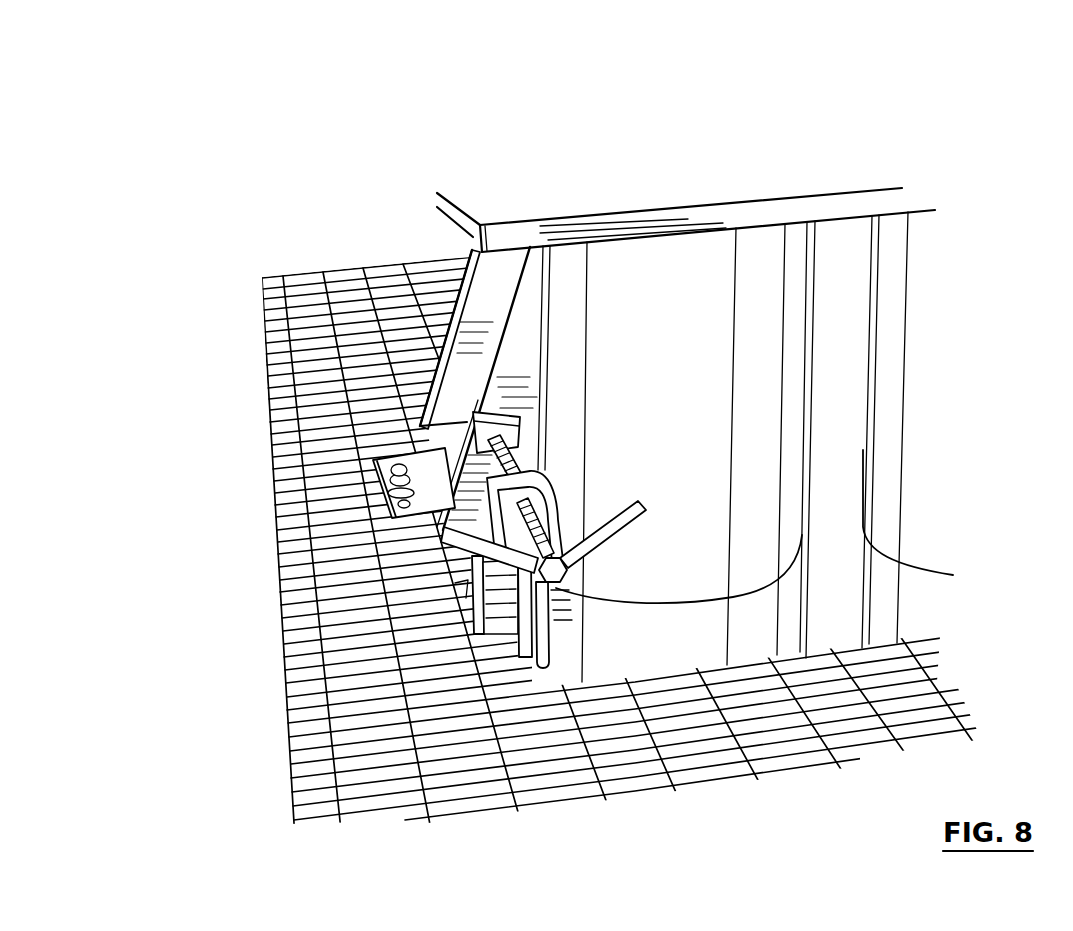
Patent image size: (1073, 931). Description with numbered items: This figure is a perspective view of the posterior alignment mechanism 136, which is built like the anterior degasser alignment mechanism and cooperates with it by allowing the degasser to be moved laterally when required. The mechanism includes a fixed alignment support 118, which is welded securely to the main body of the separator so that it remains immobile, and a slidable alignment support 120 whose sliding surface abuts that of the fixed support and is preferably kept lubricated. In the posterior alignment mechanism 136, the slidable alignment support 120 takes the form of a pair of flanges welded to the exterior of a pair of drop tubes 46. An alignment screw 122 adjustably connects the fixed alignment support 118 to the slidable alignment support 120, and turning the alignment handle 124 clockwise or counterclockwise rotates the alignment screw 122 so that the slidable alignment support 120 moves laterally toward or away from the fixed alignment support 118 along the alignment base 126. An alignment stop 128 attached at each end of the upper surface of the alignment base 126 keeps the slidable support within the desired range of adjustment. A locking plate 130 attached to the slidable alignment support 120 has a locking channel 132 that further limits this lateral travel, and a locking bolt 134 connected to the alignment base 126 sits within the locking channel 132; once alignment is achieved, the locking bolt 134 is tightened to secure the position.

The drop tubes 46 is at (701, 519).
The fixed alignment support 118 is at (490, 687).
The slidable alignment support 120 is at (483, 347).
The alignment screw 122 is at (439, 712).
The alignment handle 124 is at (551, 713).
The alignment base 126 is at (355, 599).
The alignment stop 128 is at (364, 576).
The locking plate 130 is at (417, 304).
The locking channel 132 is at (352, 364).
The locking bolt 134 is at (281, 516).
The posterior alignment mechanism 136 is at (664, 141).